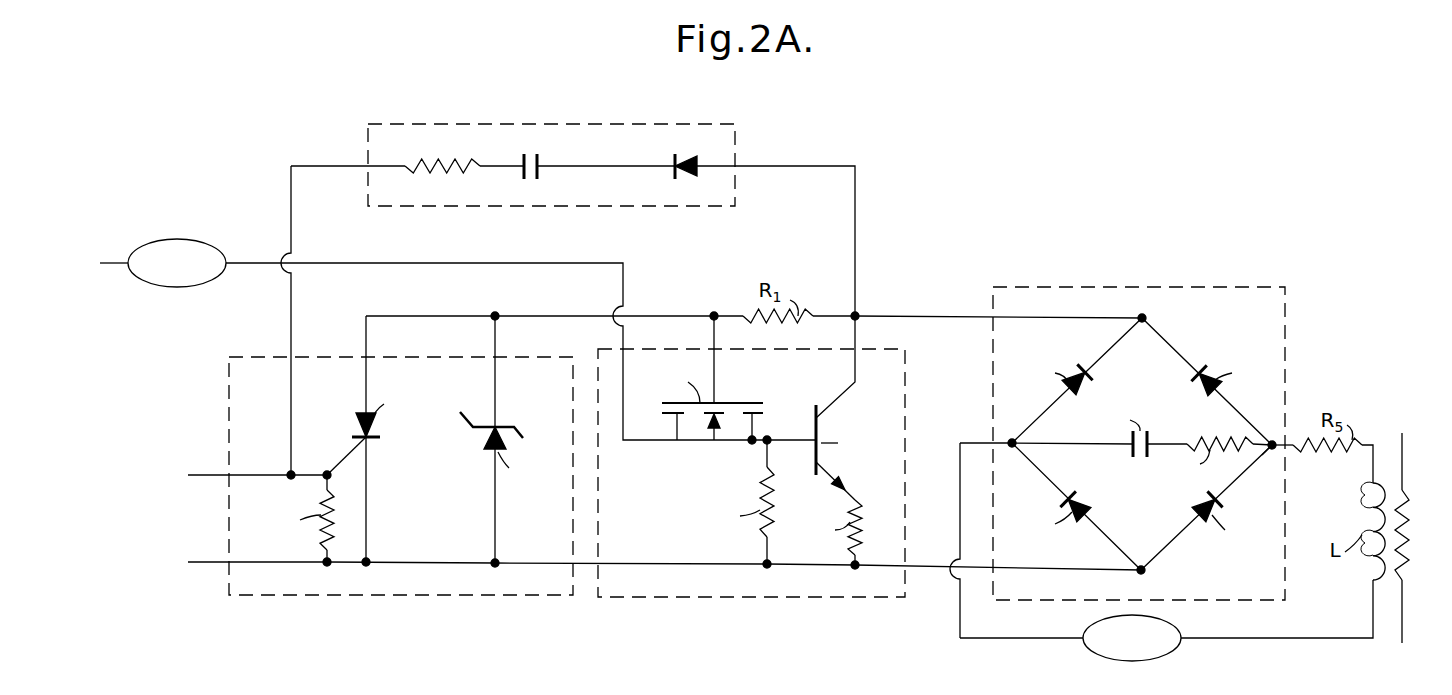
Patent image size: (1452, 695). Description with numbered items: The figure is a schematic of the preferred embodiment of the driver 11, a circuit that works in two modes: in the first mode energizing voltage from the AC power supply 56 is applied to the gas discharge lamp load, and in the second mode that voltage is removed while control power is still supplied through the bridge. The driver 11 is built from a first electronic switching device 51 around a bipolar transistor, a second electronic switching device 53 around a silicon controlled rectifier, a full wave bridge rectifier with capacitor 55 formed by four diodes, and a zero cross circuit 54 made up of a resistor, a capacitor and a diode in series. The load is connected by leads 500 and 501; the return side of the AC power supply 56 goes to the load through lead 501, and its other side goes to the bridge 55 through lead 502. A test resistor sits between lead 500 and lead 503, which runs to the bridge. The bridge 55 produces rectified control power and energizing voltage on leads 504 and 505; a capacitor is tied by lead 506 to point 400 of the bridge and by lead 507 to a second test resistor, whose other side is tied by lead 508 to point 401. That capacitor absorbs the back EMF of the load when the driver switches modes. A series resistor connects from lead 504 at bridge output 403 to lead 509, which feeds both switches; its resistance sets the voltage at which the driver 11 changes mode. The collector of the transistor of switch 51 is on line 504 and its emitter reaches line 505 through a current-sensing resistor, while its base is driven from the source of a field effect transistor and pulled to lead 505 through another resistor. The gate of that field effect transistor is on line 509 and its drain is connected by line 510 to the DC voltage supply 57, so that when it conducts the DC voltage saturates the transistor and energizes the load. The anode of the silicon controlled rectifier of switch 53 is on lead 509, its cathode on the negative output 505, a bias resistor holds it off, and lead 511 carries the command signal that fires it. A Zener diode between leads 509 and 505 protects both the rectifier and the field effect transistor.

The driver 11 is at (316, 140).
The first electronic switching device 51 is at (720, 598).
The second electronic switching device 53 is at (229, 380).
The zero cross circuit 54 is at (735, 130).
The full wave bridge rectifier with capacitor 55 is at (1150, 287).
The AC power supply 56 is at (1175, 652).
The DC voltage supply 57 is at (178, 241).
The point of bridge 400 is at (1012, 443).
The point of bridge 401 is at (1276, 447).
The output of bridge 403 is at (1146, 318).
The lead 500 is at (1376, 450).
The lead 501 is at (1290, 638).
The lead 502 is at (1000, 638).
The lead 503 is at (1283, 445).
The lead 504 is at (938, 318).
The lead 505 is at (947, 576).
The lead 506 is at (1098, 443).
The lead 507 is at (1165, 443).
The lead 508 is at (1275, 449).
The lead 509 is at (662, 316).
The line 510 is at (468, 263).
The lead 511 is at (200, 475).